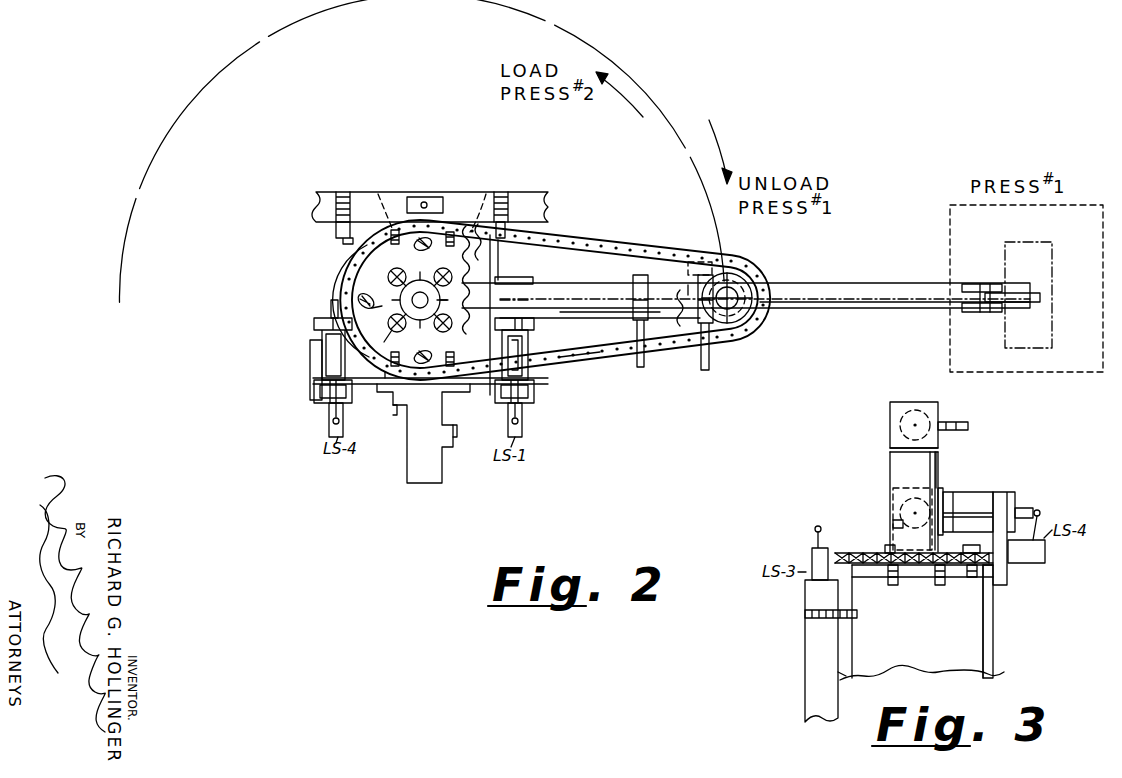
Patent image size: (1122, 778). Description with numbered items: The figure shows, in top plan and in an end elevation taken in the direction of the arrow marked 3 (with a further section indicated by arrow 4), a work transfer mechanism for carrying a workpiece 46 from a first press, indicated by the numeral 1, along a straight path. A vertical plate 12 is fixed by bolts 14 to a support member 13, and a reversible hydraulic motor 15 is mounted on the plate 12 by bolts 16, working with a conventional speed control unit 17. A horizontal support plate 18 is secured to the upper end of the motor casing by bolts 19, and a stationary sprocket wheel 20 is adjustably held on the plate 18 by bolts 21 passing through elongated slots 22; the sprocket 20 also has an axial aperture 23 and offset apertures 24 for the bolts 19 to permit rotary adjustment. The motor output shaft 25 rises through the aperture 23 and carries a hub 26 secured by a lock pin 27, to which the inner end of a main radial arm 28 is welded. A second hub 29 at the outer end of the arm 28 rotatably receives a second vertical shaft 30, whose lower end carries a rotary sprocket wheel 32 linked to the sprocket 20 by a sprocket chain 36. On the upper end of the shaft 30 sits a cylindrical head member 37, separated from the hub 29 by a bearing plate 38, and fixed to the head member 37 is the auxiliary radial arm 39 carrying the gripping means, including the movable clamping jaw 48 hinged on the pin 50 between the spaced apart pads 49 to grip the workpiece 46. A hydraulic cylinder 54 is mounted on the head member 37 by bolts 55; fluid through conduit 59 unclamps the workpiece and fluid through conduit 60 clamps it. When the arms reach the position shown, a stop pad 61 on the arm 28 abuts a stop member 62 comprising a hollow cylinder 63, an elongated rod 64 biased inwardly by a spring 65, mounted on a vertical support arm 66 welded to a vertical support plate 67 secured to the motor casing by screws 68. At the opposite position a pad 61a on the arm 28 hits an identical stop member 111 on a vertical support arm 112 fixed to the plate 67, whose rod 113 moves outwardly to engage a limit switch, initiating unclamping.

In FIG. 2, the press 1 is at (1098, 338).
In FIG. 2, the section line 3 is at (240, 300).
In FIG. 2, the section line 4 is at (593, 478).
In FIG. 2, the vertical plate 12 is at (335, 230).
In FIG. 3, the vertical plate 12 is at (844, 678).
In FIG. 2, the support member 13 is at (328, 196).
In FIG. 3, the support member 13 is at (802, 638).
In FIG. 2, the bolts 14 is at (508, 190).
In FIG. 3, the bolts 14 is at (856, 618).
In FIG. 2, the reversible power drive means 15 is at (356, 248).
In FIG. 3, the reversible power drive means 15 is at (890, 676).
In FIG. 2, the bolts 16 is at (429, 201).
In FIG. 2, the speed control unit 17 is at (406, 472).
In FIG. 2, the horizontal support plate 18 is at (410, 280).
In FIG. 3, the horizontal support plate 18 is at (964, 578).
In FIG. 2, the bolts 19 is at (422, 280).
In FIG. 3, the bolts 19 is at (890, 582).
In FIG. 2, the stationary sprocket wheel 20 is at (354, 296).
In FIG. 2, the bolts 21 is at (335, 322).
In FIG. 3, the bolts 21 is at (886, 544).
In FIG. 2, the elongated slot 22 is at (379, 331).
In FIG. 2, the axial aperture 23 is at (417, 350).
In FIG. 2, the offset apertures 24 is at (397, 276).
In FIG. 2, the first shaft 25 is at (440, 300).
In FIG. 2, the vertical sleeve or hub 26 is at (374, 298).
In FIG. 3, the vertical sleeve or hub 26 is at (896, 488).
In FIG. 2, the lock pin 27 is at (383, 311).
In FIG. 2, the main radial arm 28 is at (604, 280).
In FIG. 3, the main radial arm 28 is at (888, 508).
In FIG. 3, the second vertical sleeve or hub 29 is at (890, 465).
In FIG. 2, the second vertical shaft 30 is at (738, 264).
In FIG. 2, the rotary sprocket wheel 32 is at (688, 268).
In FIG. 2, the sprocket chain 36 is at (614, 360).
In FIG. 2, the head member 37 is at (730, 336).
In FIG. 3, the head member 37 is at (899, 404).
In FIG. 3, the bearing plate 38 is at (890, 451).
In FIG. 2, the auxiliary radial arm 39 is at (892, 286).
In FIG. 3, the auxiliary radial arm 39 is at (908, 404).
In FIG. 2, the workpiece 46 is at (1052, 266).
In FIG. 2, the movable clamping jaw 48 is at (1014, 302).
In FIG. 2, the clamp 49 is at (964, 284).
In FIG. 2, the pin 50 is at (982, 312).
In FIG. 2, the hydraulic cylinder 54 is at (637, 309).
In FIG. 2, the bolts 55 is at (680, 298).
In FIG. 2, the conduit 59 is at (644, 368).
In FIG. 3, the conduit 59 is at (954, 424).
In FIG. 2, the conduit 60 is at (705, 362).
In FIG. 2, the stop pad 61 is at (508, 296).
In FIG. 3, the stop pad 61 is at (940, 490).
In FIG. 2, the pad 61a is at (510, 276).
In FIG. 3, the pad 61a is at (890, 522).
In FIG. 2, the stop member 62 is at (536, 327).
In FIG. 2, the hollow cylinder 63 is at (538, 350).
In FIG. 2, the elongated rod 64 is at (524, 415).
In FIG. 2, the spring 65 is at (509, 414).
In FIG. 2, the vertical support arm 66 is at (538, 390).
In FIG. 2, the vertical support plate 67 is at (312, 374).
In FIG. 3, the vertical support plate 67 is at (994, 654).
In FIG. 2, the screws 68 is at (388, 386).
In FIG. 2, the stop member 111 is at (318, 345).
In FIG. 3, the stop member 111 is at (972, 494).
In FIG. 2, the vertical support arm 112 is at (318, 393).
In FIG. 3, the vertical support arm 112 is at (1007, 577).
In FIG. 2, the rod 113 is at (330, 416).
In FIG. 3, the rod 113 is at (1032, 511).